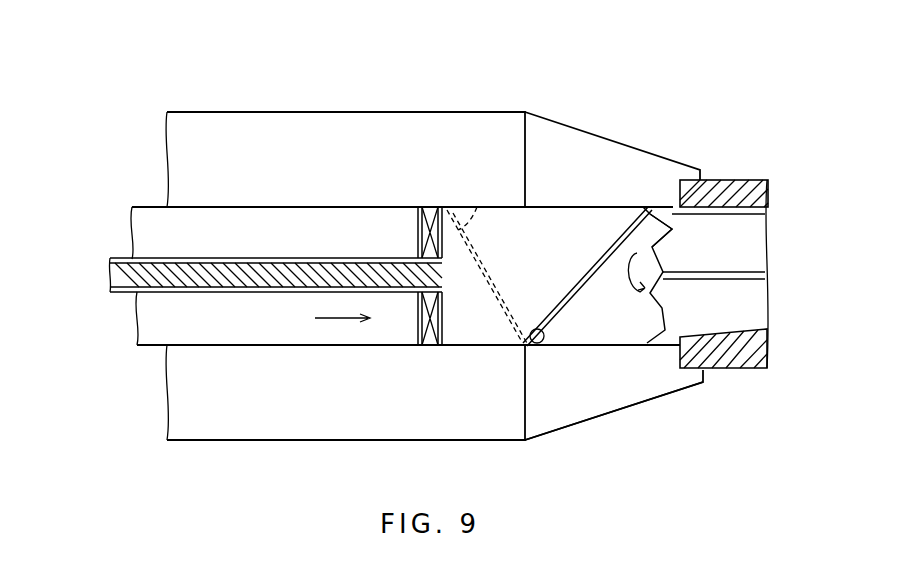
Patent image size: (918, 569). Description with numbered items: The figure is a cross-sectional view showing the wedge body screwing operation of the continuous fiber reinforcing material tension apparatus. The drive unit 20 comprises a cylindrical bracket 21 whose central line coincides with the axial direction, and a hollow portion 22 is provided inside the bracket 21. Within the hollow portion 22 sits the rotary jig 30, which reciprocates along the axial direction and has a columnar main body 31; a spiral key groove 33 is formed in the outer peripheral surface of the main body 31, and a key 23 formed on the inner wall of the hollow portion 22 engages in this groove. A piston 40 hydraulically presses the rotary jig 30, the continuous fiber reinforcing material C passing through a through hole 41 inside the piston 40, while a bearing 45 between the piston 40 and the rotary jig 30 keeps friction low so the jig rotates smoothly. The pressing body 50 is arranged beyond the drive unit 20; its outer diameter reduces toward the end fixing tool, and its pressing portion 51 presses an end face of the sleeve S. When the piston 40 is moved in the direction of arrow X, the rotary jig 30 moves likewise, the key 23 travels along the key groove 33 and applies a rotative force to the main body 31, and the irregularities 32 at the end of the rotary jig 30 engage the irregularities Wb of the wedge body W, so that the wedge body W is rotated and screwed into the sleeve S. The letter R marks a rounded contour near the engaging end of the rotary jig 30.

The drive unit 20 is at (337, 112).
The bracket 21 is at (417, 120).
The hollow portion 22 is at (215, 337).
The key 23 is at (555, 345).
The rotary jig 30 is at (603, 335).
The main body 31 is at (466, 345).
The irregularities 32 is at (667, 200).
The key groove 33 is at (477, 207).
The piston 40 is at (330, 220).
The through hole 41 is at (158, 300).
The bearing 45 is at (430, 207).
The pressing body 50 is at (622, 137).
The pressing portion 51 is at (705, 180).
The continuous fiber reinforcing material C is at (120, 262).
The rounded corner radius R is at (637, 247).
The sleeve S is at (740, 182).
The wedge body W is at (725, 368).
The irregularities Wb is at (650, 345).
The arrow X is at (340, 320).